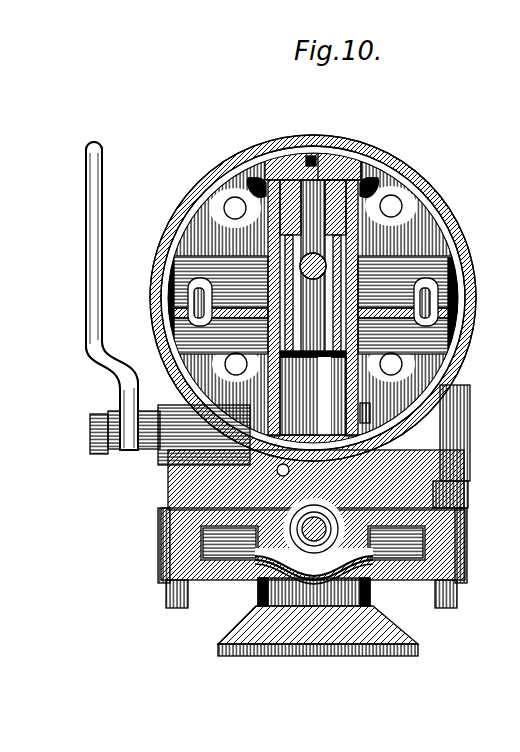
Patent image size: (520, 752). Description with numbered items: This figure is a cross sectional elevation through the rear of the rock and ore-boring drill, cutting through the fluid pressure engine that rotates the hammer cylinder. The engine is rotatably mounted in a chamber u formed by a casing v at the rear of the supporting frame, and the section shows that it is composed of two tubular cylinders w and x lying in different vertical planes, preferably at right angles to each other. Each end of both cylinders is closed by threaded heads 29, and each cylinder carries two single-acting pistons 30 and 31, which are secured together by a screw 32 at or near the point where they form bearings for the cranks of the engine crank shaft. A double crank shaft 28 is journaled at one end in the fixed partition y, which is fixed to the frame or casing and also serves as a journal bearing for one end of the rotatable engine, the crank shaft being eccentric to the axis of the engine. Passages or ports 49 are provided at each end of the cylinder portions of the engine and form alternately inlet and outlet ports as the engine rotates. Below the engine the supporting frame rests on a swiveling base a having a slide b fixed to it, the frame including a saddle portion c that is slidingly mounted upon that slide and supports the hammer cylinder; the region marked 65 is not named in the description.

The threaded heads 29 is at (326, 160).
The single-acting piston 31 is at (322, 178).
The screw 32 is at (262, 270).
The single-acting piston 30 is at (313, 396).
The double crank shaft 28 is at (270, 465).
The passages or ports 49 is at (467, 320).
The neck 65 is at (314, 592).
The chamber u is at (227, 233).
The casing v is at (208, 168).
The tubular cylinder x is at (421, 243).
The fixed partition y is at (391, 352).
The tubular cylinder w is at (357, 403).
The swiveling base a is at (318, 631).
The slide b is at (313, 543).
The saddle portion c is at (150, 537).